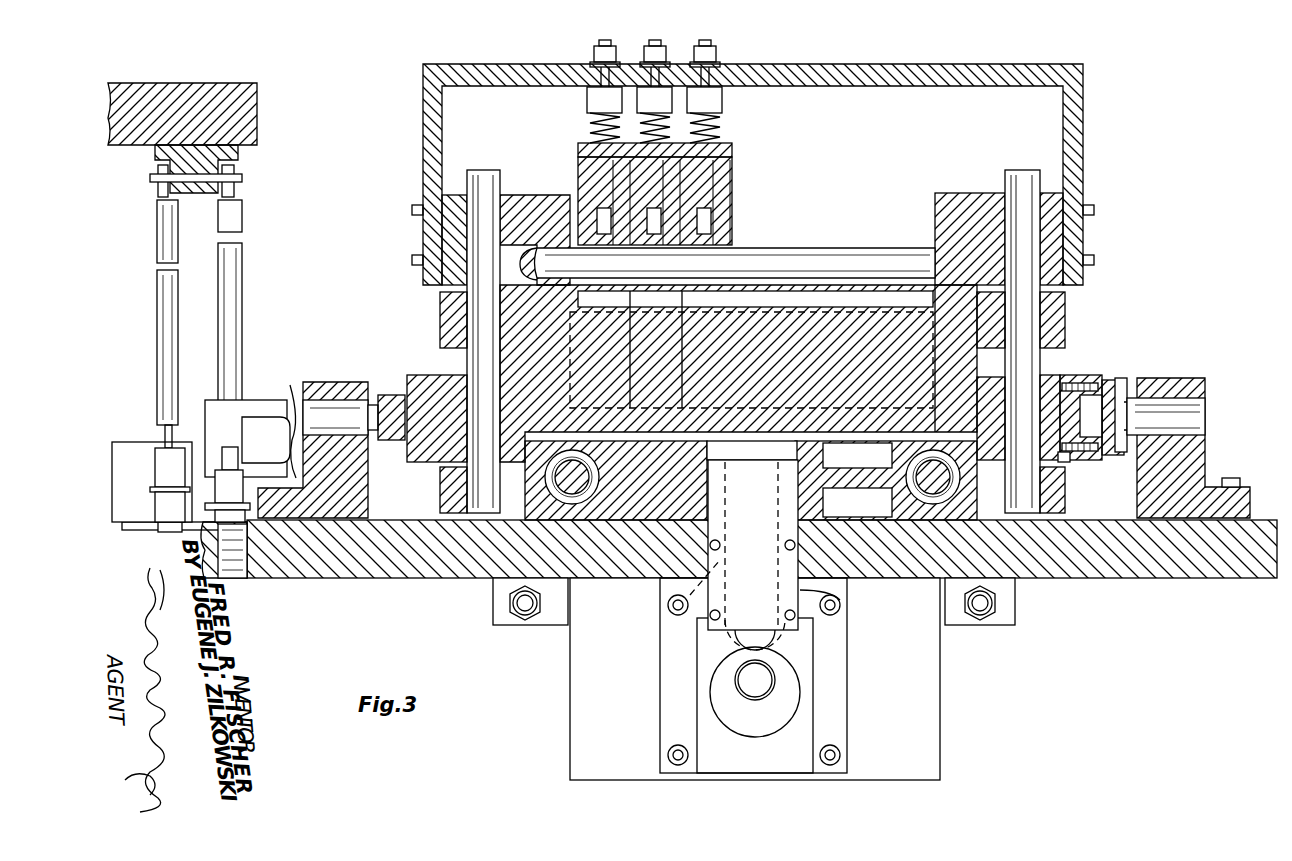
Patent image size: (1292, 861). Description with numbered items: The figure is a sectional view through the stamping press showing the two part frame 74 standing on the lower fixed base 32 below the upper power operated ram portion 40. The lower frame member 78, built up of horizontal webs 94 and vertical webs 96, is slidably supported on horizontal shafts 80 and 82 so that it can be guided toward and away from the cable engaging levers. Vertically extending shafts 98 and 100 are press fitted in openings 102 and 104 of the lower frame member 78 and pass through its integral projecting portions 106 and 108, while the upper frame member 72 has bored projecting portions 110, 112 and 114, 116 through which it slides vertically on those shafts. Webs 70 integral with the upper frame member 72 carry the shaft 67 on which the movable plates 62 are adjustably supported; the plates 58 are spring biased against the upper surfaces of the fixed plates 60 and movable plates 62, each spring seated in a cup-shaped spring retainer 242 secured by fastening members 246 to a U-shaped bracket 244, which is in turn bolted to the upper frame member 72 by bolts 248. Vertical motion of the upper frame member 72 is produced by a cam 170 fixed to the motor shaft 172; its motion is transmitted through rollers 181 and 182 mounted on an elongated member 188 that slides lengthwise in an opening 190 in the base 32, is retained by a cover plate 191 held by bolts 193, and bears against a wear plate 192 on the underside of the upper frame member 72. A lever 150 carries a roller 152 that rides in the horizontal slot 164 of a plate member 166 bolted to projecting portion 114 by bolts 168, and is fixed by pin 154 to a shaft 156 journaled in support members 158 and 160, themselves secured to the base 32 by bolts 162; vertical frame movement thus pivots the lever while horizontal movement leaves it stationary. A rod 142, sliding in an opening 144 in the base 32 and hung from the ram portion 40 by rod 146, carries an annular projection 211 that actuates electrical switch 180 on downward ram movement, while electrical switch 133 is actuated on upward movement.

The lower fixed base 32 is at (1142, 566).
The upper power operated ram portion 40 is at (250, 116).
The plates 58 is at (734, 152).
The fixed plates 60 is at (596, 176).
The movable plates 62 is at (660, 206).
The shaft 67 is at (810, 257).
The webs 70 is at (935, 203).
The upper frame member 72 is at (818, 325).
The two part frame 74 is at (1090, 329).
The lower frame member 78 is at (522, 500).
The shaft 80 is at (600, 470).
The shaft 82 is at (905, 462).
The horizontal webs 94 is at (618, 488).
The vertical webs 96 is at (617, 486).
The vertically extending shaft 98 is at (484, 182).
The vertically extending shaft 100 is at (1025, 185).
The opening 102 is at (470, 488).
The opening 104 is at (1042, 494).
The projecting portion 106 is at (452, 320).
The projecting portion 108 is at (1066, 302).
The projecting portion 110 is at (428, 380).
The projecting portion 112 is at (510, 200).
The projecting portion 114 is at (1052, 390).
The projecting portion 116 is at (1065, 205).
The electrical switch 133 is at (258, 400).
The rod 142 is at (176, 531).
The opening 144 is at (280, 570).
The rod 146 is at (178, 322).
The lever 150 is at (1142, 386).
The roller 152 is at (1120, 382).
The pin 154 is at (1128, 378).
The shaft 156 is at (1205, 414).
The support member 158 is at (1180, 472).
The support member 160 is at (336, 385).
The bolts 162 is at (292, 400).
The horizontal slot 164 is at (1118, 386).
The plate member 166 is at (1086, 394).
The bolts 168 is at (1068, 462).
The cam 170 is at (756, 732).
The shaft 172 is at (736, 684).
The electrical switch 180 is at (118, 440).
The roller 181 is at (705, 650).
The roller 182 is at (752, 535).
The elongated member 188 is at (690, 600).
The opening 190 is at (810, 590).
The cover plate 191 is at (792, 606).
The wear plate 192 is at (812, 462).
The bolts 193 is at (790, 622).
The annular projection 211 is at (160, 480).
The cup-shaped spring retainer 242 is at (724, 104).
The U-shaped bracket 244 is at (908, 84).
The fastening members 246 is at (718, 54).
The bolts 248 is at (412, 210).